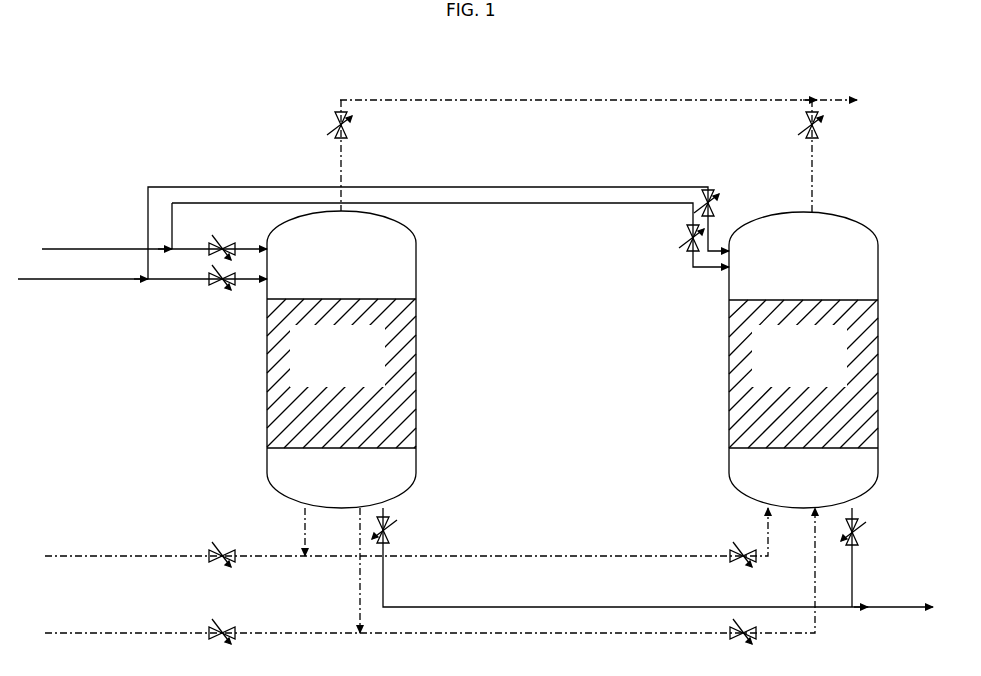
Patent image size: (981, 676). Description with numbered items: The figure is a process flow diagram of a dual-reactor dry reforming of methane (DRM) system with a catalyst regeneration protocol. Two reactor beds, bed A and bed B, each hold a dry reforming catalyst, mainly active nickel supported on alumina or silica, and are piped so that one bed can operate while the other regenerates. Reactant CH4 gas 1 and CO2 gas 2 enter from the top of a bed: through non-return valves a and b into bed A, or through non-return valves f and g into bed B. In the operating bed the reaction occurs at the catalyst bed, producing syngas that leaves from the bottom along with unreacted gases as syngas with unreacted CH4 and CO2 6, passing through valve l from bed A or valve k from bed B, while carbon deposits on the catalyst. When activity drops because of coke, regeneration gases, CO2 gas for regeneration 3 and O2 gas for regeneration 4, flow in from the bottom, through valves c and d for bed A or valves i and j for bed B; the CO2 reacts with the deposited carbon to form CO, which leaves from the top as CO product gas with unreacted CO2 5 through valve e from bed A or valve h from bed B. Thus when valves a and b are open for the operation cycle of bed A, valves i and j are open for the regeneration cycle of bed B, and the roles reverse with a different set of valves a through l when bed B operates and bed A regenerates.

The CH4 gas 1 is at (80, 248).
The CO2 gas 2 is at (97, 283).
The CO2 gas for regeneration 3 is at (120, 555).
The O2 gas for regeneration 4 is at (120, 632).
The CO product gas with unreacted CO2 5 is at (653, 98).
The syngas with unreacted CH4 and CO2 6 is at (680, 605).
The bed A is at (341, 359).
The bed B is at (803, 360).
The non-return valve a is at (222, 241).
The non-return valve b is at (222, 286).
The non-return valve c is at (222, 552).
The non-return valve d is at (222, 629).
The non-return valve e is at (332, 125).
The non-return valve f is at (712, 203).
The non-return valve g is at (685, 238).
The non-return valve h is at (803, 125).
The non-return valve i is at (743, 547).
The non-return valve j is at (743, 639).
The non-return valve k is at (860, 532).
The non-return valve l is at (389, 530).